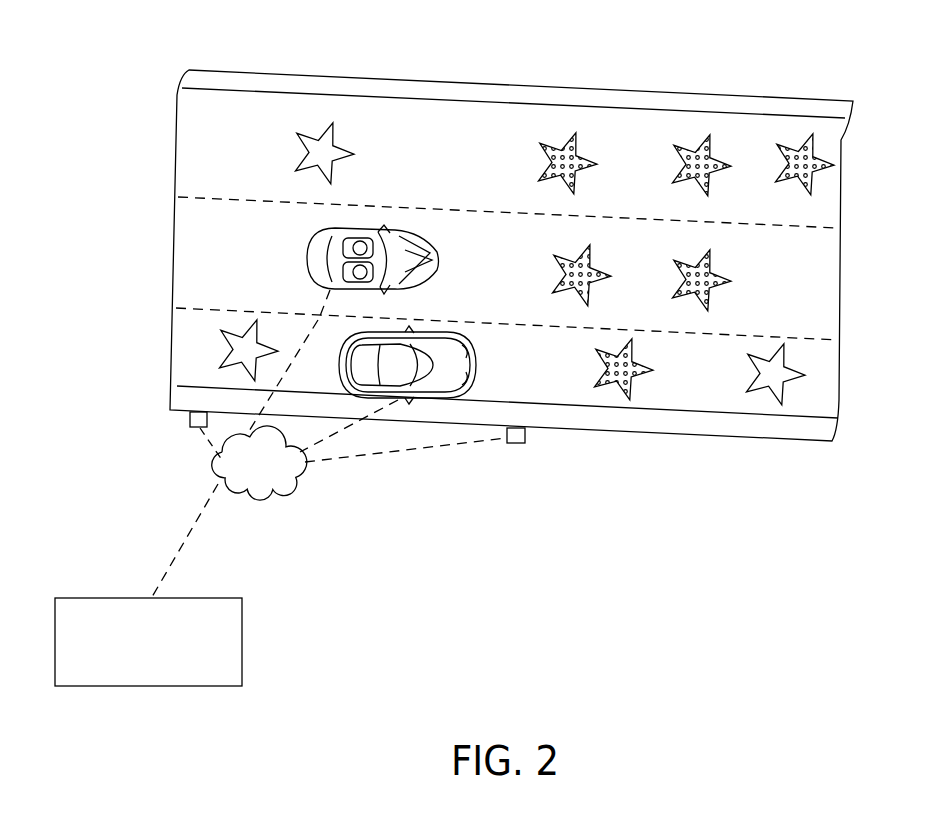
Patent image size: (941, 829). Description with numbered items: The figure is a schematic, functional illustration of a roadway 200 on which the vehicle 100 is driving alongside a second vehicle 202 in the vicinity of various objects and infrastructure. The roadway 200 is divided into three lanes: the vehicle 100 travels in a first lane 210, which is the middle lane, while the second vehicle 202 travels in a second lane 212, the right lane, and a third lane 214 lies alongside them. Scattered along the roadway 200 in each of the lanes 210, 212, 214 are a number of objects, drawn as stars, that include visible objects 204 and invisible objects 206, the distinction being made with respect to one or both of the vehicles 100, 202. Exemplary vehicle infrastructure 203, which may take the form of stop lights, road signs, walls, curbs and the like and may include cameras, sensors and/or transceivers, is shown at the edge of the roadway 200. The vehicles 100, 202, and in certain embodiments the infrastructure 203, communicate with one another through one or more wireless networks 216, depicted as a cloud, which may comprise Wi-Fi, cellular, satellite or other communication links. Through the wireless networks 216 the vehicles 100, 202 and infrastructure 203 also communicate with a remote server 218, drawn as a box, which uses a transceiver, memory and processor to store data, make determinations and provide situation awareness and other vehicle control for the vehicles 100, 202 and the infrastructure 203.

The vehicle 100 is at (420, 232).
The roadway 200 is at (834, 99).
The second vehicle 202 is at (440, 380).
The vehicle infrastructure 203 is at (196, 428).
The visible objects 204 is at (778, 152).
The invisible objects 206 is at (294, 153).
The first lane 210 is at (832, 290).
The second lane 212 is at (832, 377).
The third lane 214 is at (832, 192).
The wireless networks 216 is at (273, 480).
The remote server 218 is at (243, 641).